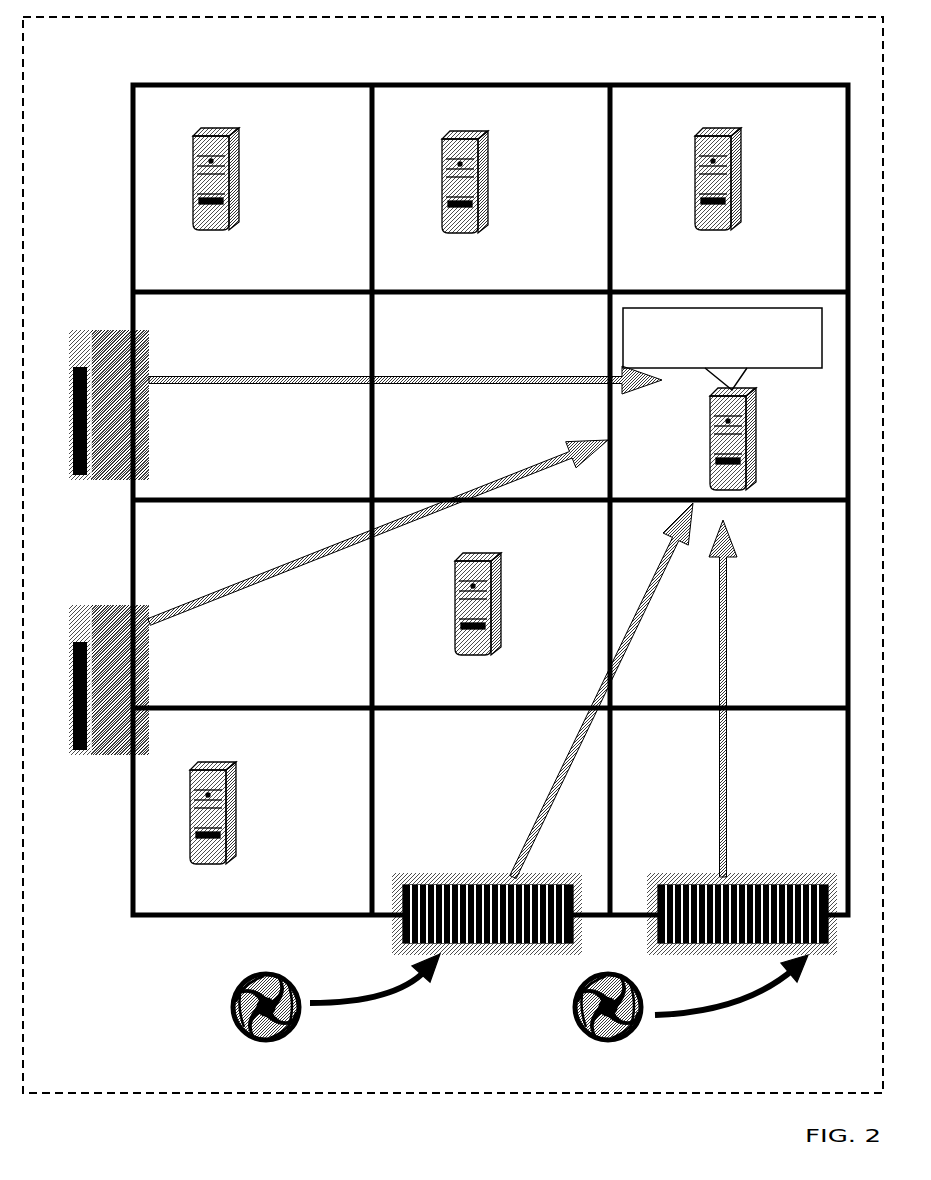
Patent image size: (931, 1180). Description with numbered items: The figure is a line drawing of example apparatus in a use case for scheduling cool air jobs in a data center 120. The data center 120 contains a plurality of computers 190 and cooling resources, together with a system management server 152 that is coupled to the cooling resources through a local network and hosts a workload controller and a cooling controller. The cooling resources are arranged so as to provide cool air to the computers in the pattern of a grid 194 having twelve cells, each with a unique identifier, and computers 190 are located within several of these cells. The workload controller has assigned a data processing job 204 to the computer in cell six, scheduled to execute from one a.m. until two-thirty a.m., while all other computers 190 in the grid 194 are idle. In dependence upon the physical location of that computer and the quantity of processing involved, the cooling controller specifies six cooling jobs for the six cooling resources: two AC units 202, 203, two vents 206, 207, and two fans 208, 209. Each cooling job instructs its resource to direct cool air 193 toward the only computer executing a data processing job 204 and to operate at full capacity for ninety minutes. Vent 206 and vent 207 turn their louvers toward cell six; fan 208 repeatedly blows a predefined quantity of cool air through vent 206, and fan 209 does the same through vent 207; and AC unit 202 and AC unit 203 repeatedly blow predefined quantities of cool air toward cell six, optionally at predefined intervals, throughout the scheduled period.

The data center 120 is at (453, 555).
The grid 194 is at (133, 218).
The computers 190 is at (520, 391).
The system management server 152 is at (271, 813).
The cool air 193 is at (478, 697).
The AC unit 202 is at (89, 405).
The AC unit 203 is at (89, 680).
The data processing job 204 is at (722, 349).
The vent 206 is at (487, 927).
The vent 207 is at (742, 927).
The fan 208 is at (245, 1007).
The fan 209 is at (577, 1009).